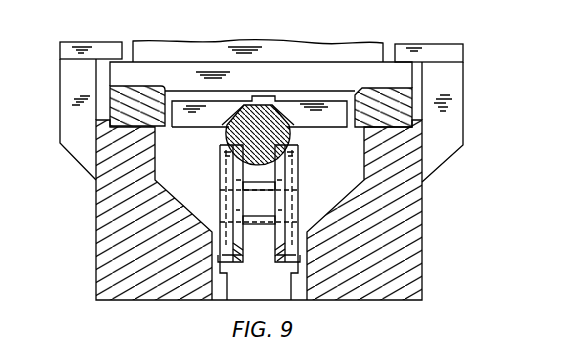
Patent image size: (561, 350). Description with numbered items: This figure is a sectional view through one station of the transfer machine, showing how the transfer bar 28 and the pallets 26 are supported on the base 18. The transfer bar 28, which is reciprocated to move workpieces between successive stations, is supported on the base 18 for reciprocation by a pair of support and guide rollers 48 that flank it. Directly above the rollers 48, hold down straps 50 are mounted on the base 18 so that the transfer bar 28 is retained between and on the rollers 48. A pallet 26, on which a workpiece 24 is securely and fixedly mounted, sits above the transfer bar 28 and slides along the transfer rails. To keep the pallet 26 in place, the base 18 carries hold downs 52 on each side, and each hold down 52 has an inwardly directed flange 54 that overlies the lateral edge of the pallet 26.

The base 18 is at (416, 226).
The workpiece 24 is at (295, 48).
The pallet 26 is at (386, 73).
The transfer bar 28 is at (268, 118).
The support and guide rollers 48 is at (223, 198).
The hold down strap 50 is at (202, 113).
The hold down 52 is at (68, 99).
The inwardly directed flange 54 is at (95, 48).